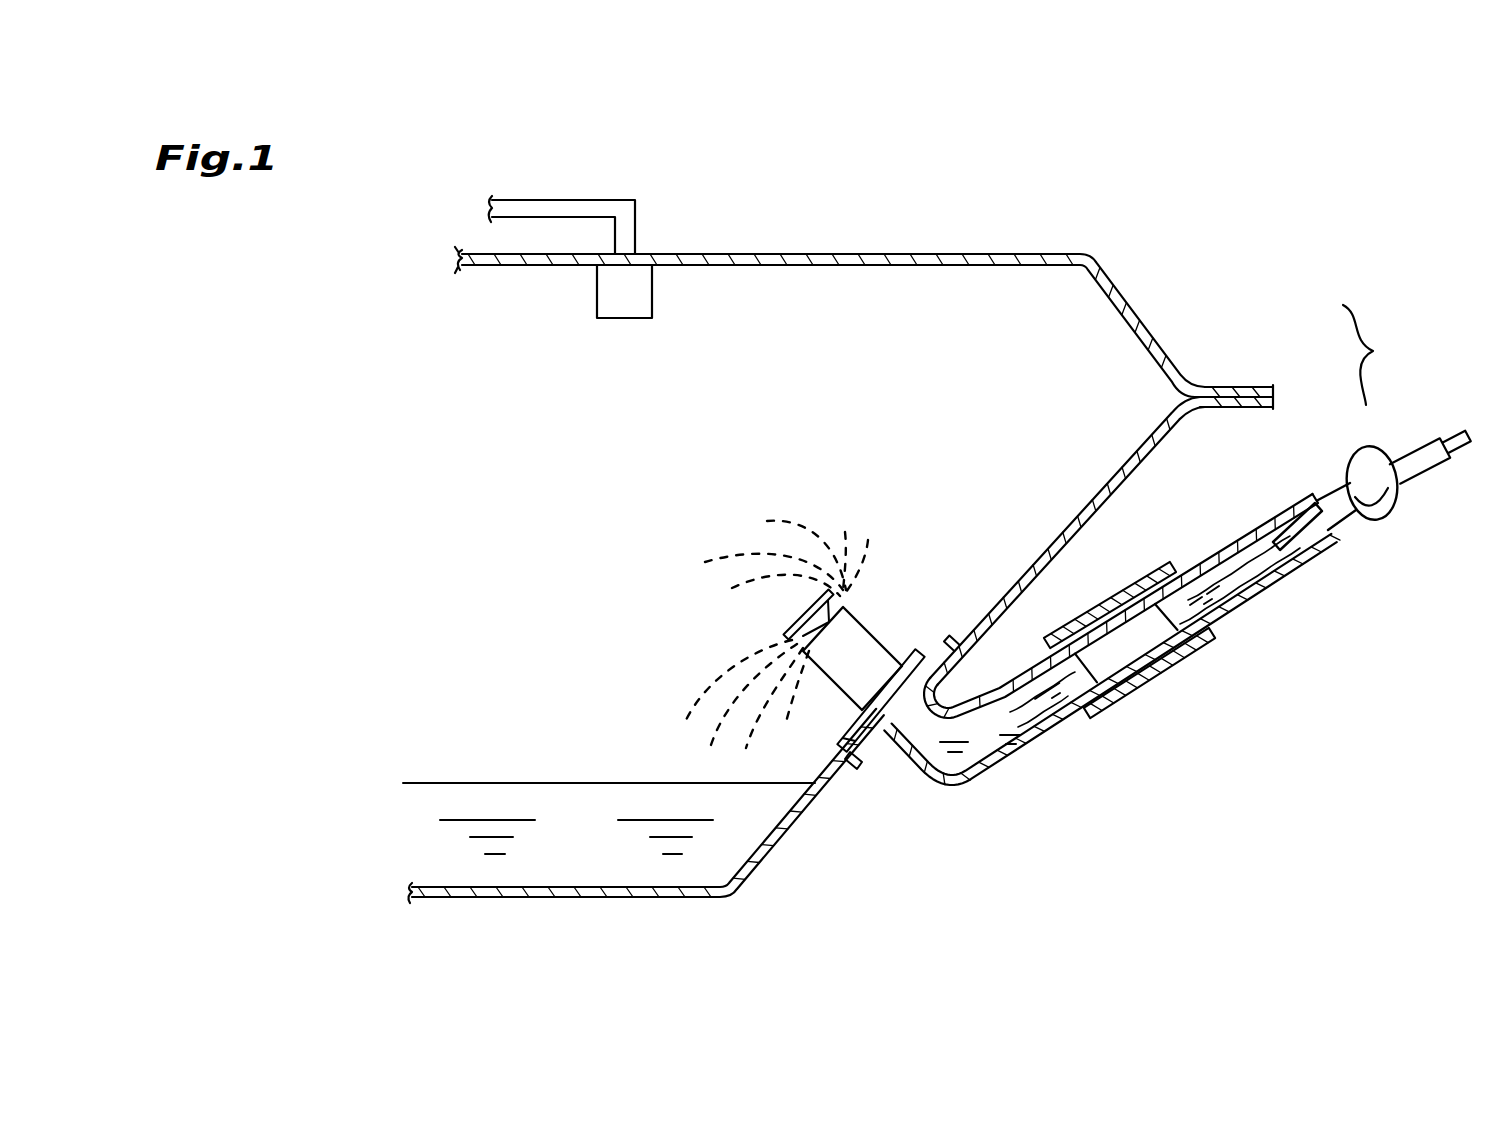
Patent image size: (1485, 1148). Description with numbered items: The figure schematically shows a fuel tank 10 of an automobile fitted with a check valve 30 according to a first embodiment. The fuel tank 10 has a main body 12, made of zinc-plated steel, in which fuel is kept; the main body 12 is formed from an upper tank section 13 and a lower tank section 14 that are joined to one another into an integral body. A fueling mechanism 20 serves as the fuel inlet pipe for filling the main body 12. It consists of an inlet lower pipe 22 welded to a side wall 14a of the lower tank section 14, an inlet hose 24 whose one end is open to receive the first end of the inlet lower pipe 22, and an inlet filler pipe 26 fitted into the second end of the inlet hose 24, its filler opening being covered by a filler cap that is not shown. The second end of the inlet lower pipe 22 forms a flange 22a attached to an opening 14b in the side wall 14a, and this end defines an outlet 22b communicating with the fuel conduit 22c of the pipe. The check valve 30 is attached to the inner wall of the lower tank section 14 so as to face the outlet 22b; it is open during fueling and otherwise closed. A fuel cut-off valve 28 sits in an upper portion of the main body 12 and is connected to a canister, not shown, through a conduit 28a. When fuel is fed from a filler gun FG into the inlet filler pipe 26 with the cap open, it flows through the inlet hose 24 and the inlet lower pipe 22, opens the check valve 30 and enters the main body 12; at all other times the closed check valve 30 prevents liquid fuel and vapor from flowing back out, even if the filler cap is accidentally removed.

The fuel tank 10 is at (871, 210).
The main body 12 is at (1375, 355).
The upper tank section 13 is at (1270, 384).
The lower tank section 14 is at (1267, 410).
The side wall 14a is at (1050, 552).
The opening 14b is at (923, 647).
The fueling mechanism 20 is at (1319, 774).
The inlet lower pipe 22 is at (977, 778).
The flange 22a is at (870, 767).
The outlet 22b is at (915, 767).
The fuel conduit 22c is at (1013, 732).
The inlet hose 24 is at (1125, 690).
The inlet filler pipe 26 is at (1260, 595).
The fuel cut-off valve 28 is at (640, 305).
The conduit 28a is at (580, 207).
The check valve 30 is at (879, 616).
The filler gun FG is at (1425, 470).